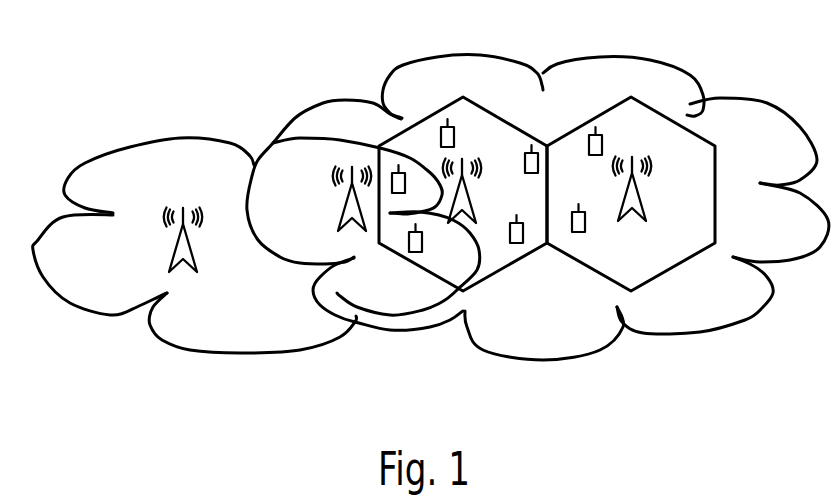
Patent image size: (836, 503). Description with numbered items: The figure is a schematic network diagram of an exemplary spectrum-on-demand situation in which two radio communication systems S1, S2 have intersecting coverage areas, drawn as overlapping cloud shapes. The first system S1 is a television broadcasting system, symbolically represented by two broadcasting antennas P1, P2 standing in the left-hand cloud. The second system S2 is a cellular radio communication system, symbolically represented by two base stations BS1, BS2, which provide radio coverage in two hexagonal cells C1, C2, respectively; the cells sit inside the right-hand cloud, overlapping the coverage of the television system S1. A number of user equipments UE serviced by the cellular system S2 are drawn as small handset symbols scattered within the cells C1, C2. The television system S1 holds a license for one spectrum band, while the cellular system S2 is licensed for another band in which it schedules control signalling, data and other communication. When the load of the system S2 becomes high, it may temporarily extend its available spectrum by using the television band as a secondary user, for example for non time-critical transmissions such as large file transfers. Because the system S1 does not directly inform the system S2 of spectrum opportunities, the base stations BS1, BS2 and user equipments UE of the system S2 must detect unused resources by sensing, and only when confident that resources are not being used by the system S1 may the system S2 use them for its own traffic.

The broadcasting antenna P1 is at (340, 212).
The broadcasting antenna P2 is at (176, 253).
The base station BS1 is at (476, 192).
The base station BS2 is at (644, 192).
The cell C1 is at (432, 113).
The cell C2 is at (673, 267).
The user equipment UE is at (523, 240).
The radio communication system S1 is at (245, 355).
The radio communication system S2 is at (540, 362).